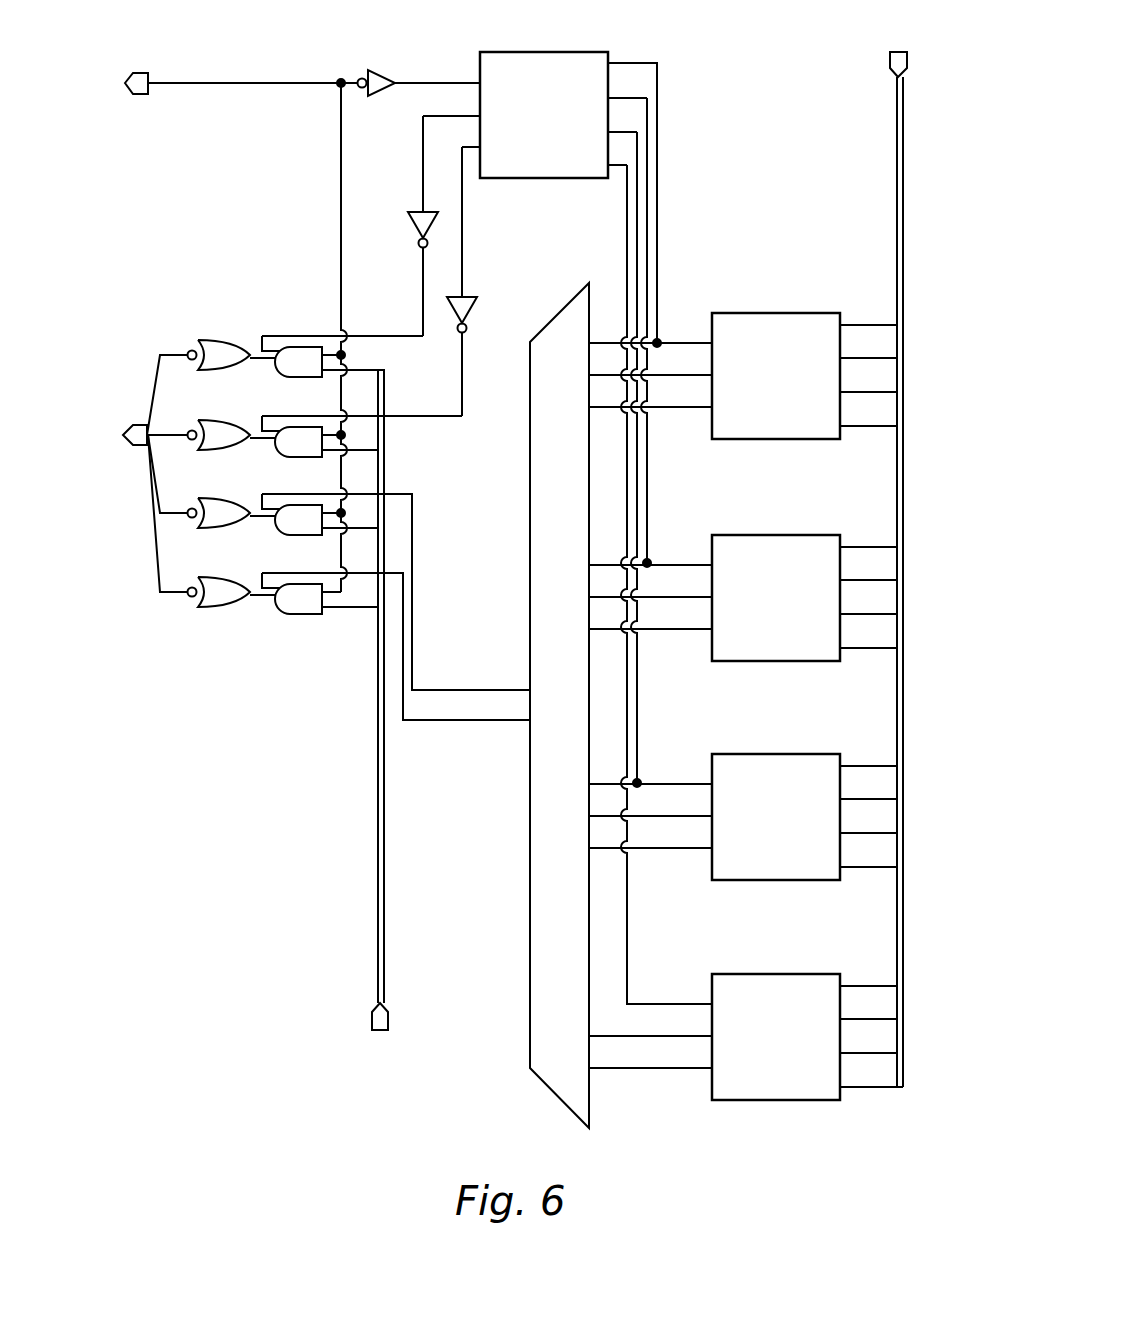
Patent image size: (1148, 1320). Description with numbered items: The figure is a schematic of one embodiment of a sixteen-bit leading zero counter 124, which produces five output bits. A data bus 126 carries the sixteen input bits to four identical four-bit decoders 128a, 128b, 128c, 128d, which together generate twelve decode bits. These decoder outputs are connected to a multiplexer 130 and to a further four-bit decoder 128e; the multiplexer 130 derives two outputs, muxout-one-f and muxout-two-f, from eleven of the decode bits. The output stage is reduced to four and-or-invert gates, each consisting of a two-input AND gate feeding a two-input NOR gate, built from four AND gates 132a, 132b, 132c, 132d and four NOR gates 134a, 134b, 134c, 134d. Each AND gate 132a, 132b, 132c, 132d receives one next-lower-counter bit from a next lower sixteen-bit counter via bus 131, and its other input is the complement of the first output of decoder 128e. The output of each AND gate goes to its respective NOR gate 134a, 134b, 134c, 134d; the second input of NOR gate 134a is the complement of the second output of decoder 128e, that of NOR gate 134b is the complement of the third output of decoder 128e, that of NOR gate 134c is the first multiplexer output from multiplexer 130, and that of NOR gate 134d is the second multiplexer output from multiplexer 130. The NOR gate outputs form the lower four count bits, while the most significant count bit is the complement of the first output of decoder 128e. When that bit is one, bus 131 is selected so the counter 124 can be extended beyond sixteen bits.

The 16-bit counter 124 is at (277, 955).
The data bus 126 is at (896, 212).
The 4-bit decoder 128a is at (792, 313).
The 4-bit decoder 128b is at (792, 535).
The 4-bit decoder 128c is at (792, 754).
The 4-bit decoder 128d is at (792, 974).
The 4-bit decoder 128e is at (558, 52).
The multiplexer 130 is at (562, 310).
The bus 131 is at (378, 901).
The AND gate 132a is at (312, 347).
The AND gate 132b is at (314, 427).
The AND gate 132c is at (314, 505).
The AND gate 132d is at (312, 584).
The NOR gate 134a is at (228, 341).
The NOR gate 134b is at (230, 421).
The NOR gate 134c is at (230, 499).
The NOR gate 134d is at (228, 607).